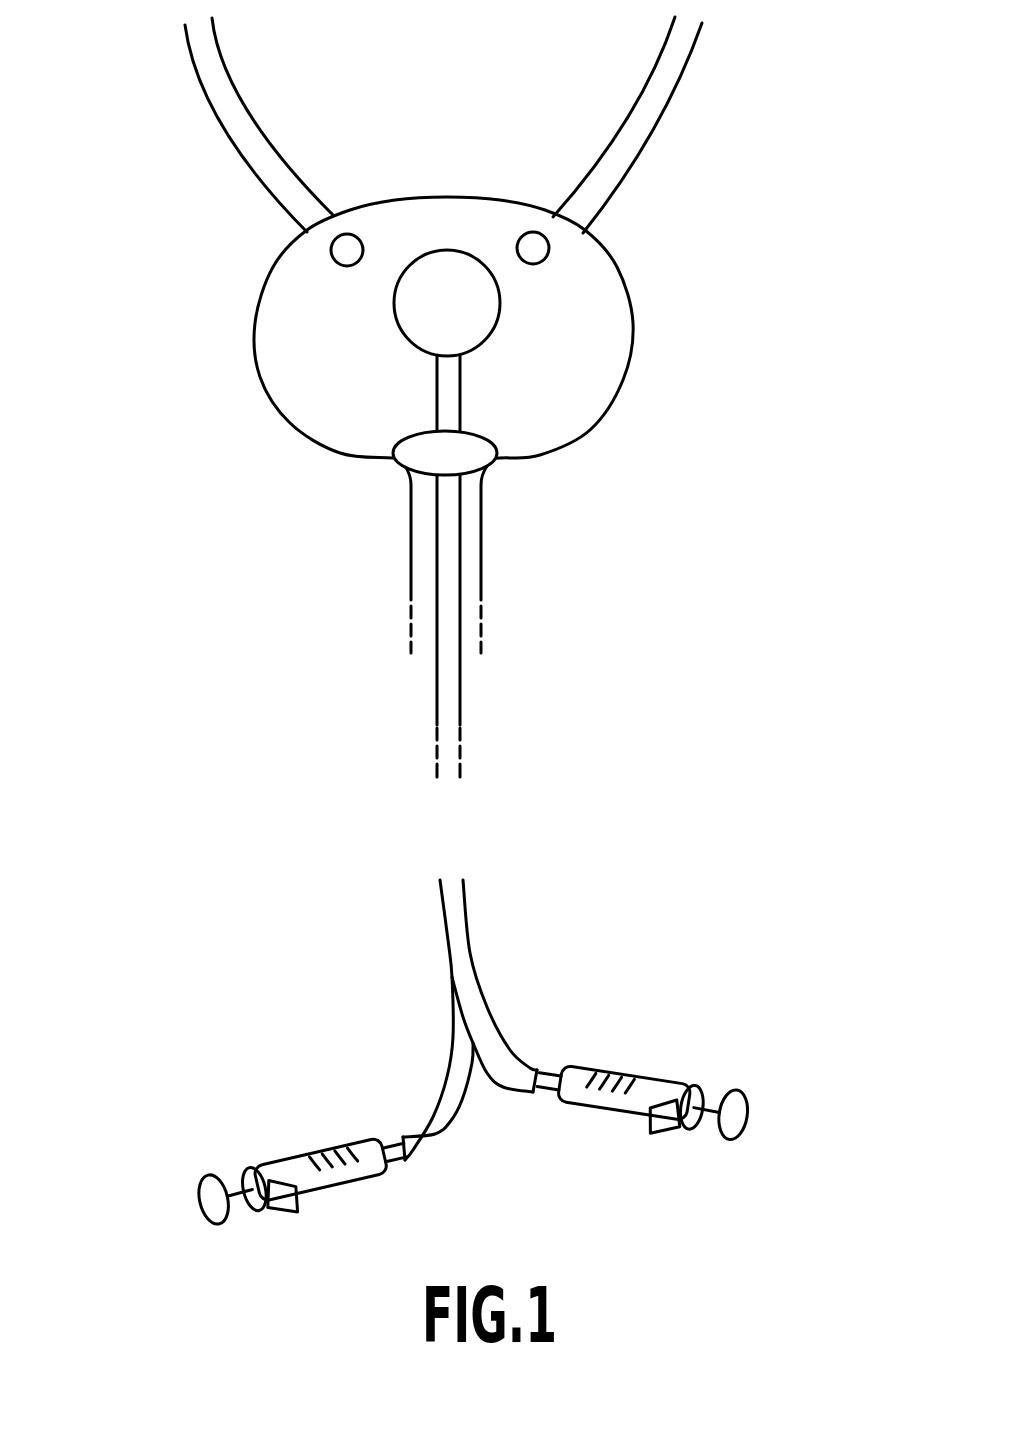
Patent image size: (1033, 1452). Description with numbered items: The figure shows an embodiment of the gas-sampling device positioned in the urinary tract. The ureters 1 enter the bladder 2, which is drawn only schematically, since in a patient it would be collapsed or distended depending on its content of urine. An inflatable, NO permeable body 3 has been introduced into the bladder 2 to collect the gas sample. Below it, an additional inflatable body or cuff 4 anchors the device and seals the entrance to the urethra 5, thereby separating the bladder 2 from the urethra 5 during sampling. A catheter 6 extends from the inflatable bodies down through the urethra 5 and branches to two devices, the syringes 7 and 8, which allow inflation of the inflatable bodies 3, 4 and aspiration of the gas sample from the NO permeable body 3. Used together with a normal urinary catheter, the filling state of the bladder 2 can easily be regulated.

The ureters 1 is at (678, 90).
The bladder 2 is at (587, 298).
The inflatable NO permeable body 3 is at (473, 327).
The inflatable cuff 4 is at (422, 453).
The urethra 5 is at (480, 522).
The catheter 6 is at (470, 928).
The syringe 7 is at (645, 1073).
The syringe 8 is at (317, 1143).